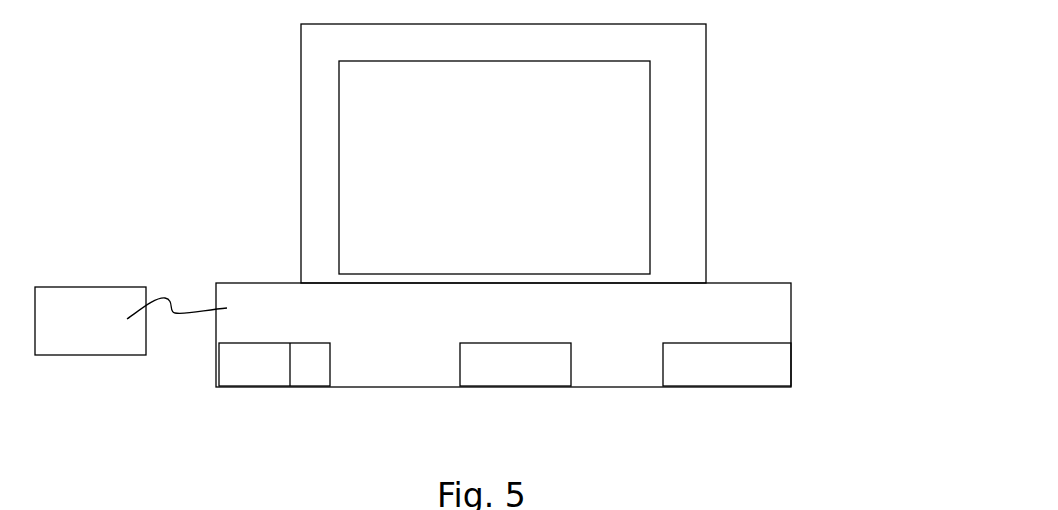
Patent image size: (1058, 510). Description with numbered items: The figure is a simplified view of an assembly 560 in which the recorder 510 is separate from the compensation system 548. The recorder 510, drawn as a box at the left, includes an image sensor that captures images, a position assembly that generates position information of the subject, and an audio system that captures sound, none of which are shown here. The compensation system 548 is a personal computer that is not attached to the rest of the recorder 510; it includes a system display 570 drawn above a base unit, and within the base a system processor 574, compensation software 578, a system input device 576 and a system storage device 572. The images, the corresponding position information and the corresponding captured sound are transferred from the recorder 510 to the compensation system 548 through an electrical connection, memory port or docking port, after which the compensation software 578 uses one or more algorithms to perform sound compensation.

The assembly 560 is at (182, 108).
The compensation system 548 is at (298, 200).
The system display 570 is at (347, 223).
The recorder 510 is at (115, 297).
The system processor 574 is at (258, 368).
The compensation software 578 is at (310, 370).
The system input device 576 is at (512, 366).
The system storage device 572 is at (722, 368).